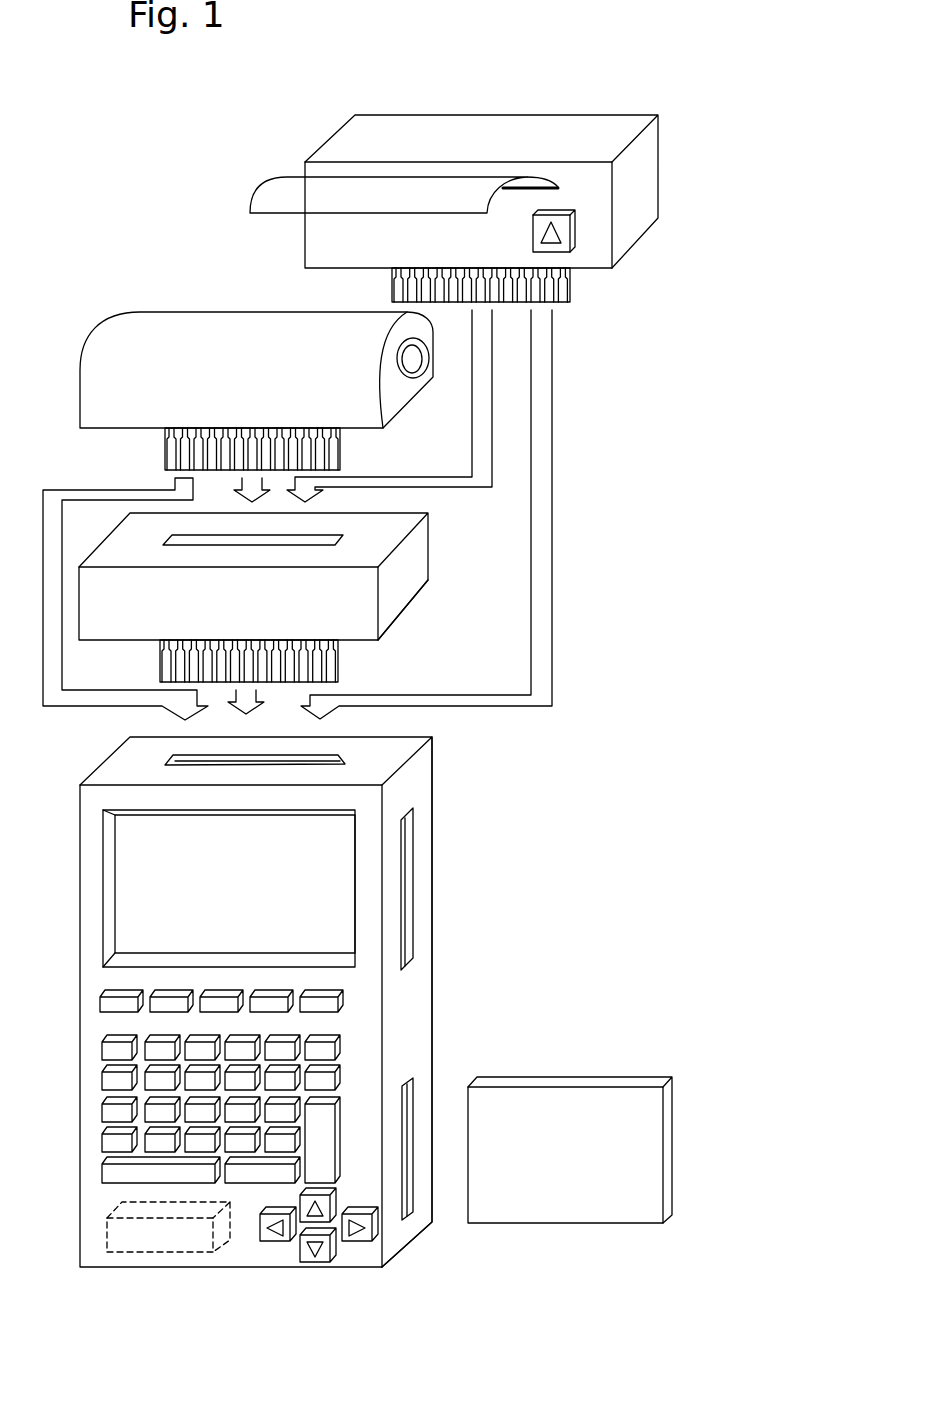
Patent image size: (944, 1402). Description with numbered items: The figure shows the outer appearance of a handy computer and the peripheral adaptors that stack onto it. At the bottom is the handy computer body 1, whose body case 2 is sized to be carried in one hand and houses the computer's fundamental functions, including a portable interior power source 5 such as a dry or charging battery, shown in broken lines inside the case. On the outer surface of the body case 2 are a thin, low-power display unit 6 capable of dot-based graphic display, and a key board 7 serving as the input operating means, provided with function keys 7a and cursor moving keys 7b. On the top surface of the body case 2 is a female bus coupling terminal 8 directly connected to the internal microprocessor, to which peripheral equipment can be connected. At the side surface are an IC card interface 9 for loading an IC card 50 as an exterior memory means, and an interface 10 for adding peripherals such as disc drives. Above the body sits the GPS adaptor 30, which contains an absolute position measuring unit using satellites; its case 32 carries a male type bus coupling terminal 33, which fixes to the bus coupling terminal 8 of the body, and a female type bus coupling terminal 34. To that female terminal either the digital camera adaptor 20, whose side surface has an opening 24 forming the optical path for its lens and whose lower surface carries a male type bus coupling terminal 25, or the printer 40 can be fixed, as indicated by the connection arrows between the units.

The handy computer body 1 is at (289, 1032).
The body case 2 is at (422, 845).
The portable interior power source 5 is at (175, 1243).
The display unit 6 is at (240, 897).
The key board 7 is at (343, 1055).
The function keys 7a is at (355, 998).
The cursor moving keys 7b is at (343, 1248).
The bus coupling terminal 8 is at (185, 762).
The IC card interface 9 is at (407, 1098).
The interface 10 is at (403, 893).
The digital camera adaptor 20 is at (245, 357).
The opening 24 is at (422, 363).
The male type bus coupling terminal 25 is at (165, 447).
The GPS adaptor 30 is at (295, 592).
The case 32 is at (392, 622).
The male type bus coupling terminal 33 is at (160, 658).
The female type bus coupling terminal 34 is at (332, 542).
The printer 40 is at (600, 270).
The IC card 50 is at (628, 1098).